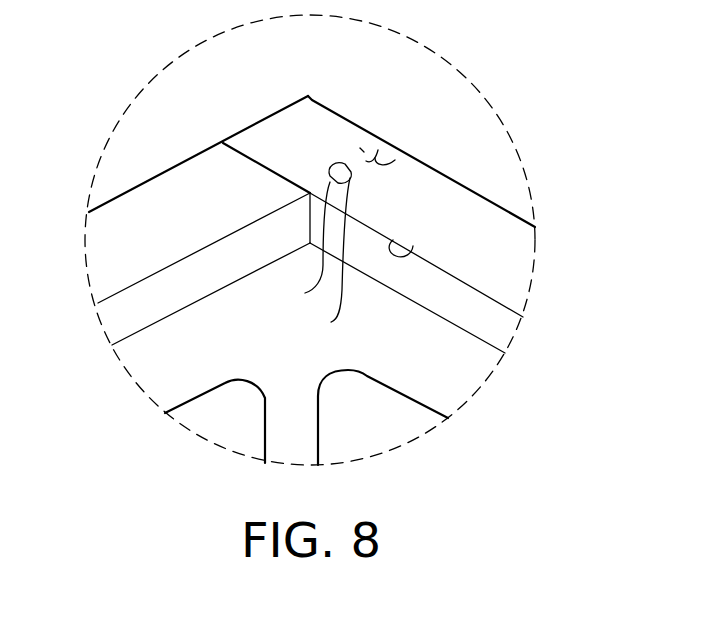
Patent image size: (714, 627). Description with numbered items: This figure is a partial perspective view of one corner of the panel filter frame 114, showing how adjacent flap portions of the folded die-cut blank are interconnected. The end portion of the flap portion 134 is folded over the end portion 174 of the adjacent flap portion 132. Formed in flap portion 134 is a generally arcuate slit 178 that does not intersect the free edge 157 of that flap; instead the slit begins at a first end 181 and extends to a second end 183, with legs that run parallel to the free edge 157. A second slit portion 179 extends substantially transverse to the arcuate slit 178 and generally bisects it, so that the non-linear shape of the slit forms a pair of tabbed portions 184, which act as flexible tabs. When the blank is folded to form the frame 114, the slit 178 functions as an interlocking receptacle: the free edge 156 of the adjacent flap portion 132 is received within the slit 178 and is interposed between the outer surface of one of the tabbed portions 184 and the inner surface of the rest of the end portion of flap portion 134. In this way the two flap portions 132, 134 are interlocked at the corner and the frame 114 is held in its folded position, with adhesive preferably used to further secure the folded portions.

The panel filter frame 114 is at (440, 84).
The adjacent flap portion 132 is at (152, 217).
The flap portion 134 is at (490, 234).
The end portion of the adjacent flap portion 174 is at (262, 149).
The slit 178 is at (333, 163).
The tabbed portions 184 is at (340, 154).
The second end of the slit 183 is at (378, 150).
The free edge of the adjacent flap portion 156 is at (395, 160).
The free edge of the flap portion 157 is at (413, 246).
The first end of the slit 181 is at (300, 243).
The second slit portion 179 is at (321, 256).